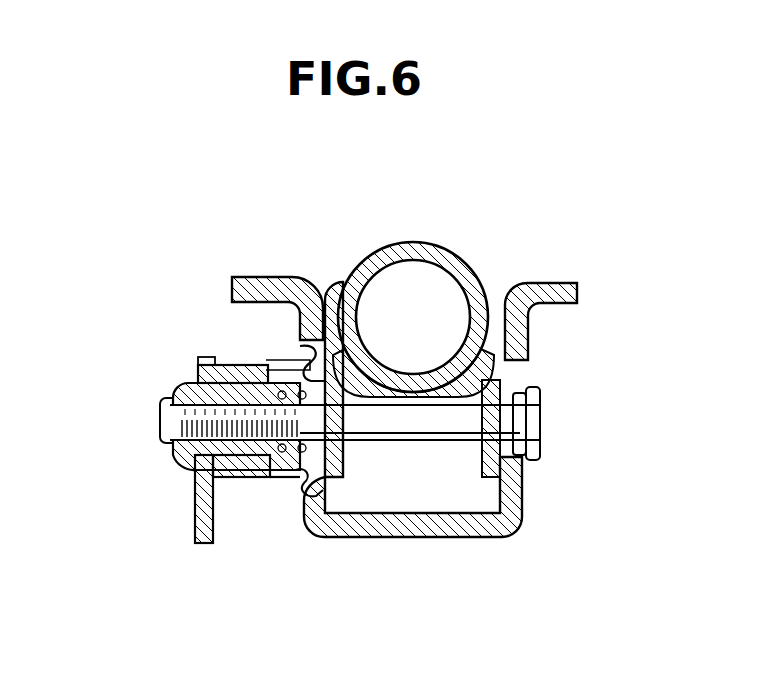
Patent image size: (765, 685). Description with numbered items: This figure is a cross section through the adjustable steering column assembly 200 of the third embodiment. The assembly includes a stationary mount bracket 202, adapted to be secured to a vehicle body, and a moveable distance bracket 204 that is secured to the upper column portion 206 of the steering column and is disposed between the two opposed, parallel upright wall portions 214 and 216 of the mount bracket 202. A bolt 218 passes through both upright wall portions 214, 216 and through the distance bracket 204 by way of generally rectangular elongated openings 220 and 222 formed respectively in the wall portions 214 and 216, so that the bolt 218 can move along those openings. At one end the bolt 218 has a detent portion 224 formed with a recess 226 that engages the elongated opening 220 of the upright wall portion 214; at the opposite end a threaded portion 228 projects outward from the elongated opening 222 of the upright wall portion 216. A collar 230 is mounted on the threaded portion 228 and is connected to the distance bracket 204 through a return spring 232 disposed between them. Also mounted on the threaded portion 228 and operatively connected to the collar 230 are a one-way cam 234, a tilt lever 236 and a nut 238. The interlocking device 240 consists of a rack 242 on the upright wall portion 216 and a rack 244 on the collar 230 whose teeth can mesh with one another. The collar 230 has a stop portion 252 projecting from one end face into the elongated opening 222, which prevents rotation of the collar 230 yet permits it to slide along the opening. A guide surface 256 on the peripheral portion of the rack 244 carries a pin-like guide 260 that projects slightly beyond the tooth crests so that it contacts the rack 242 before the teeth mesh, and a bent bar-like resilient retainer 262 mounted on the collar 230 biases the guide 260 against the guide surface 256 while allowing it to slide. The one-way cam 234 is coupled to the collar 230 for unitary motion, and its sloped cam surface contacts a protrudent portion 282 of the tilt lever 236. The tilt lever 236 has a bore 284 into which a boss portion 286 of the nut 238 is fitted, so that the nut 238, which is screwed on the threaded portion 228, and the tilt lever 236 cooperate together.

The adjustable steering column assembly 200 is at (430, 230).
The mount bracket 202 is at (560, 285).
The distance bracket 204 is at (507, 300).
The upper column portion 206 is at (455, 258).
The upright wall portion 214 is at (530, 338).
The upright wall portion 216 is at (326, 332).
The bolt 218 is at (407, 445).
The elongated opening 220 is at (516, 485).
The elongated opening 222 is at (298, 336).
The detent portion 224 is at (540, 433).
The recess 226 is at (525, 403).
The threaded portion 228 is at (173, 389).
The collar 230 is at (295, 472).
The return spring 232 is at (283, 472).
The one-way cam 234 is at (262, 481).
The tilt lever 236 is at (195, 530).
The nut 238 is at (175, 453).
The interlocking device 240 is at (200, 276).
The rack 242 is at (289, 341).
The rack 244 is at (326, 540).
The stop portion 252 is at (384, 538).
The guide surface 256 is at (295, 352).
The guide 260 is at (379, 258).
The resilient retainer 262 is at (275, 362).
The protrudent portion 282 is at (250, 366).
The bore 284 is at (205, 480).
The boss portion 286 is at (198, 361).